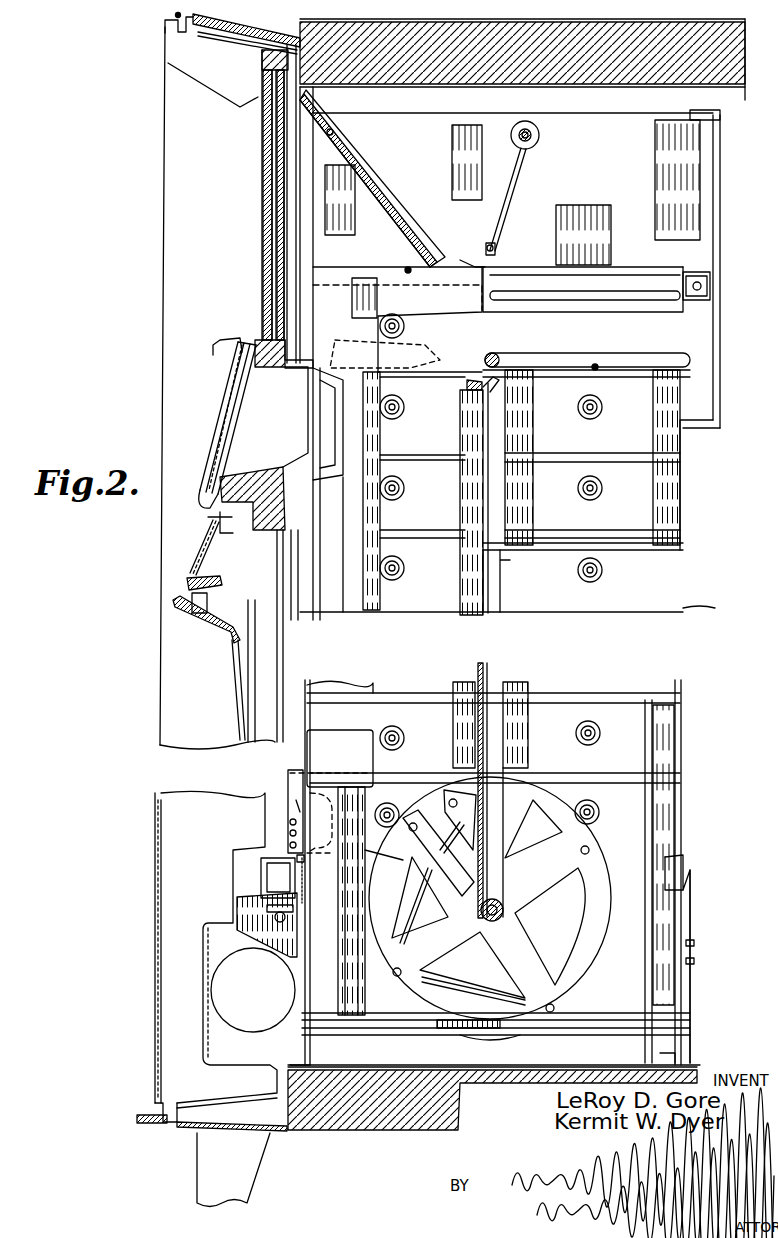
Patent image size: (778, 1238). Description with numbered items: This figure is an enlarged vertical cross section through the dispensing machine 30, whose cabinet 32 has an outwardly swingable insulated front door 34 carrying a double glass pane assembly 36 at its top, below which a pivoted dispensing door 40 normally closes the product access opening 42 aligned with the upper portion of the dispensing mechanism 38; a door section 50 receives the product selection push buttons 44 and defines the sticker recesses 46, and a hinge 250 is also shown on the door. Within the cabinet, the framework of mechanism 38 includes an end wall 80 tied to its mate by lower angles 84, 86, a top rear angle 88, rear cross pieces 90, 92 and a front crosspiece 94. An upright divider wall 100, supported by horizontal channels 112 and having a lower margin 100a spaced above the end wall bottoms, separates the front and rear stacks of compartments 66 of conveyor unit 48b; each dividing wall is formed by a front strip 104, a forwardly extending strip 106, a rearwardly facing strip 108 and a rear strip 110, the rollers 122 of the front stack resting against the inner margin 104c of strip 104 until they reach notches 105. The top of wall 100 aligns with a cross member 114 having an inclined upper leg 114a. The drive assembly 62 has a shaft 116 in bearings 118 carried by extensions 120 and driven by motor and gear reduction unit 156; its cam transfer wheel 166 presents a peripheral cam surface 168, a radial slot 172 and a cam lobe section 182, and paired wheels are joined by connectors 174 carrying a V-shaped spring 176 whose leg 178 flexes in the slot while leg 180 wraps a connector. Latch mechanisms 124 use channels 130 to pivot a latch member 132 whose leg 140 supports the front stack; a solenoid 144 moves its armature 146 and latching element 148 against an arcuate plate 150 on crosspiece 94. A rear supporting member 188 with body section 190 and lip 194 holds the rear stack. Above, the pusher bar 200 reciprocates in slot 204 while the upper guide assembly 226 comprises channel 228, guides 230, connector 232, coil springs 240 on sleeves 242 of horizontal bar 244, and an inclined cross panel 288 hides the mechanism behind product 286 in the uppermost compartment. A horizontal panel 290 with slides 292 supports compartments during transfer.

The dispensing machine 30 is at (178, 15).
The cabinet 32 is at (495, 1085).
The front door 34 is at (154, 908).
The pane assembly 36 is at (262, 190).
The dispensing mechanism 38 is at (722, 358).
The dispensing door 40 is at (224, 420).
The product access opening 42 is at (262, 368).
The product selection push buttons 44 is at (178, 592).
The recesses 46 is at (213, 528).
The conveyor unit 48b is at (488, 290).
The door section 50 is at (186, 616).
The drive assembly 62 is at (222, 1033).
The compartments 66 is at (408, 266).
The end wall 80 is at (716, 190).
The angle 84 is at (296, 1066).
The angle 86 is at (662, 1060).
The top rear angle 88 is at (720, 118).
The horizontal cross piece 90 is at (720, 398).
The horizontal cross piece 92 is at (694, 950).
The horizontal crosspiece 94 is at (302, 940).
The divider wall 100 is at (520, 484).
The lower margin 100a is at (480, 960).
The front strip 104 is at (372, 558).
The inner margin 104c is at (382, 444).
The notches 105 is at (345, 786).
The forwardly extending strip 106 is at (462, 486).
The rearwardly facing strip 108 is at (520, 432).
The rear strip 110 is at (660, 440).
The channels 112 is at (488, 690).
The cross member 114 is at (478, 390).
The inclined upper leg 114a is at (515, 395).
The shaft 116 is at (504, 913).
The bearings 118 is at (500, 905).
The extensions 120 is at (512, 790).
The rollers 122 is at (378, 324).
The latch mechanisms 124 is at (282, 850).
The channels 130 is at (285, 803).
The latch member 132 is at (302, 890).
The leg 140 is at (304, 860).
The solenoid 144 is at (261, 866).
The armature 146 is at (267, 906).
The latching element 148 is at (279, 923).
The arcuate plate 150 is at (248, 926).
The electric motor and gear reduction unit 156 is at (218, 990).
The cam transfer wheel 166 is at (598, 844).
The peripheral cam surface 168 is at (562, 800).
The radial slot 172 is at (432, 815).
The connectors 174 is at (550, 1012).
The spring 176 is at (415, 992).
The leg 178 is at (424, 896).
The leg 180 is at (437, 1003).
The cam lobe section 182 is at (403, 862).
The supporting member 188 is at (672, 886).
The body section 190 is at (683, 895).
The lip 194 is at (684, 857).
The bar 200 is at (496, 352).
The slot 204 is at (650, 353).
The upper compartment guide assembly 226 is at (630, 260).
The channel 228 is at (705, 276).
The guides 230 is at (460, 270).
The connector 232 is at (488, 242).
The coil springs 240 is at (517, 174).
The sleeves 242 is at (541, 139).
The horizontal bar 244 is at (535, 128).
The hinge 250 is at (216, 346).
The product 286 is at (428, 350).
The cross panel 288 is at (405, 177).
The horizontal panel 290 is at (600, 1022).
The slides 292 is at (608, 1022).